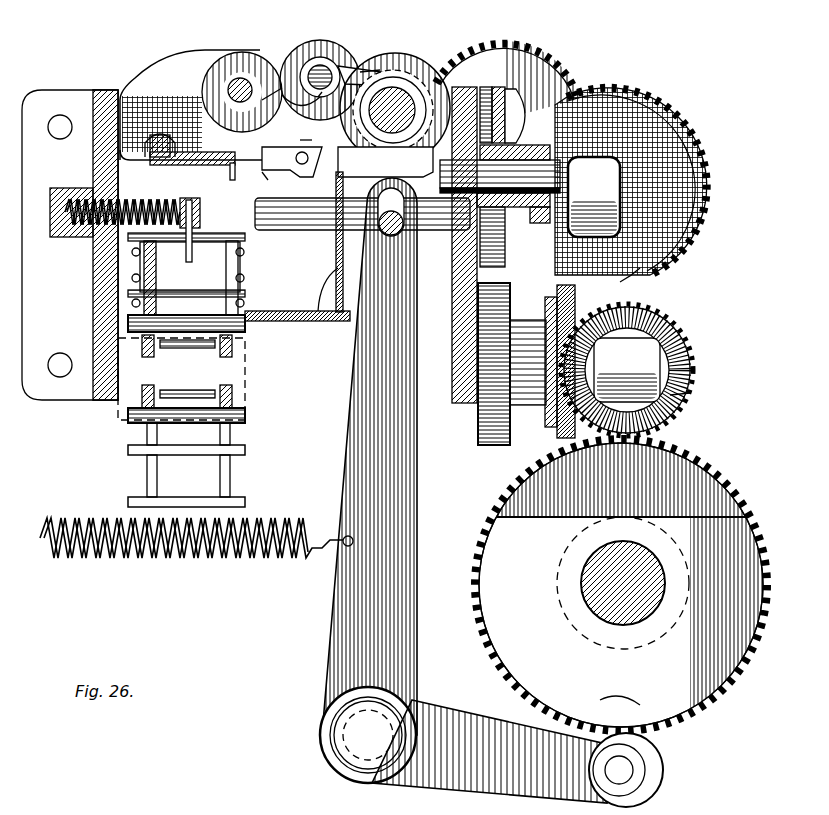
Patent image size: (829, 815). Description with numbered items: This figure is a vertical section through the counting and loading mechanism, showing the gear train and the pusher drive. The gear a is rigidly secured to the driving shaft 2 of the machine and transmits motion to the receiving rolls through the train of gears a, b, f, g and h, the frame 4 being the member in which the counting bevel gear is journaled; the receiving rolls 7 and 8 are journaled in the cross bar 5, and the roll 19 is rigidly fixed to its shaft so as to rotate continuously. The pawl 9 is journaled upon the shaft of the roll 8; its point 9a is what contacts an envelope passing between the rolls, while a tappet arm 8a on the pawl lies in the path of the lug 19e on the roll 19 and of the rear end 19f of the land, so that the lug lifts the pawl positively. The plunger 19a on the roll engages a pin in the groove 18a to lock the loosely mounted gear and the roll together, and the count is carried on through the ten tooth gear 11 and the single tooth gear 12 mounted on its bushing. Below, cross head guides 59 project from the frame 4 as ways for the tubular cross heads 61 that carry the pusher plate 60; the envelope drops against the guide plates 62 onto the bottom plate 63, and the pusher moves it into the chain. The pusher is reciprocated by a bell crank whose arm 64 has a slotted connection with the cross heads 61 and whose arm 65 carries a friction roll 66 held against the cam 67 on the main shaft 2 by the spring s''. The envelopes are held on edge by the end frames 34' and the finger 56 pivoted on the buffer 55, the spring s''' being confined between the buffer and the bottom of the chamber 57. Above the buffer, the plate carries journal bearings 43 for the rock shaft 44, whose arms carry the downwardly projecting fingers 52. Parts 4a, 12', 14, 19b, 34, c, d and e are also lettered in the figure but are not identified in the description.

The driving shaft 2 is at (594, 594).
The frame 4 is at (93, 320).
The frame portion 4a is at (277, 172).
The cross bar 5 is at (515, 116).
The receiving roll 7 is at (242, 92).
The receiving roll 8 is at (320, 80).
The tappet arm 8a is at (315, 104).
The pawl 9 is at (345, 58).
The point of pawl 9a is at (266, 101).
The ten tooth gear 11 is at (512, 111).
The single tooth gear 12 is at (597, 173).
The shaft 12' is at (500, 212).
The bracket 14 is at (302, 130).
The groove 18a is at (372, 140).
The roll 19 is at (292, 174).
The plunger 19a is at (374, 207).
The plate 19b is at (399, 173).
The lug 19e is at (378, 62).
The rear end of land 19f is at (400, 70).
The slide frame 34 is at (181, 344).
The end frame 34' is at (206, 370).
The journal bearing 43 is at (195, 165).
The shaft 44 is at (153, 135).
The finger 52 is at (245, 176).
The buffer 55 is at (200, 213).
The finger 56 is at (192, 258).
The chamber 57 is at (62, 237).
The cross head guide 59 is at (355, 213).
The pusher plate 60 is at (336, 236).
The tubular cross head 61 is at (400, 228).
The guide plate 62 is at (318, 285).
The bottom plate 63 is at (262, 311).
The bell crank arm 64 is at (418, 596).
The bell crank arm 65 is at (489, 751).
The friction roll 66 is at (663, 770).
The cam 67 is at (620, 691).
The gear a is at (621, 585).
The gear b is at (690, 322).
The bevel gear rim c is at (690, 393).
The bevel pinion d is at (545, 428).
The pinion e is at (493, 447).
The gear f is at (632, 264).
The gear g is at (631, 181).
The gear h is at (507, 80).
The spring s'' is at (196, 527).
The spring s''' is at (122, 201).